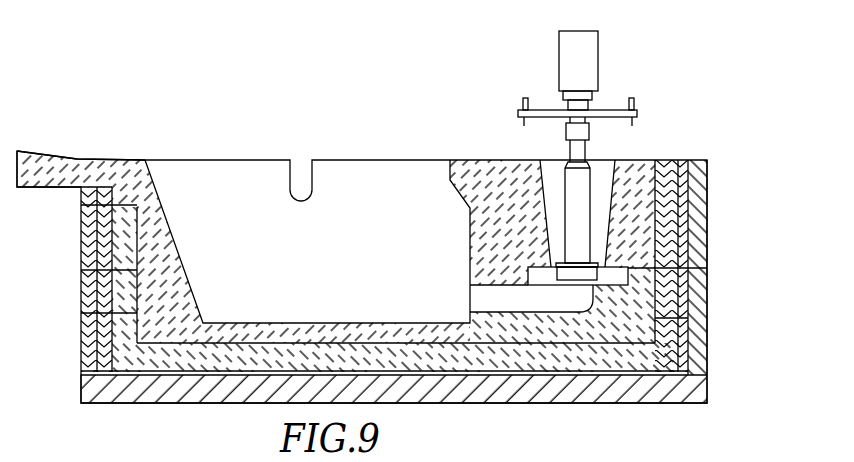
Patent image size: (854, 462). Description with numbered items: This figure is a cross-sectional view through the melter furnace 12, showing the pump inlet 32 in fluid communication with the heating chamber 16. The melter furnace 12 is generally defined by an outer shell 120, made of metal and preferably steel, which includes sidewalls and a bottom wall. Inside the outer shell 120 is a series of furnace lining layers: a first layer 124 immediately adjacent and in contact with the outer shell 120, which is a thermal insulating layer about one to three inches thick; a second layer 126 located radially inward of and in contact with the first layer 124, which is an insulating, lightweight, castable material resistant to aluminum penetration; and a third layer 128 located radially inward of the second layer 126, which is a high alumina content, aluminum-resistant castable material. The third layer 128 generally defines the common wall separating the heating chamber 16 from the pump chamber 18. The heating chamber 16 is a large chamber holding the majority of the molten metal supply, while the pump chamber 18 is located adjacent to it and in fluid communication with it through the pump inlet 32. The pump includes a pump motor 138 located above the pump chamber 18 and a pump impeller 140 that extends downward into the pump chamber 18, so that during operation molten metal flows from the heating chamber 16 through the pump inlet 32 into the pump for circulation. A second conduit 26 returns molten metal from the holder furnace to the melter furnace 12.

The melter furnace 12 is at (200, 113).
The heating chamber 16 is at (338, 277).
The pump chamber 18 is at (609, 186).
The second conduit 26 is at (52, 152).
The pump inlet 32 is at (490, 288).
The outer shell 120 is at (706, 284).
The first layer 124 is at (678, 324).
The second layer 126 is at (667, 357).
The third layer 128 is at (590, 336).
The pump motor 138 is at (559, 50).
The pump impeller 140 is at (600, 268).